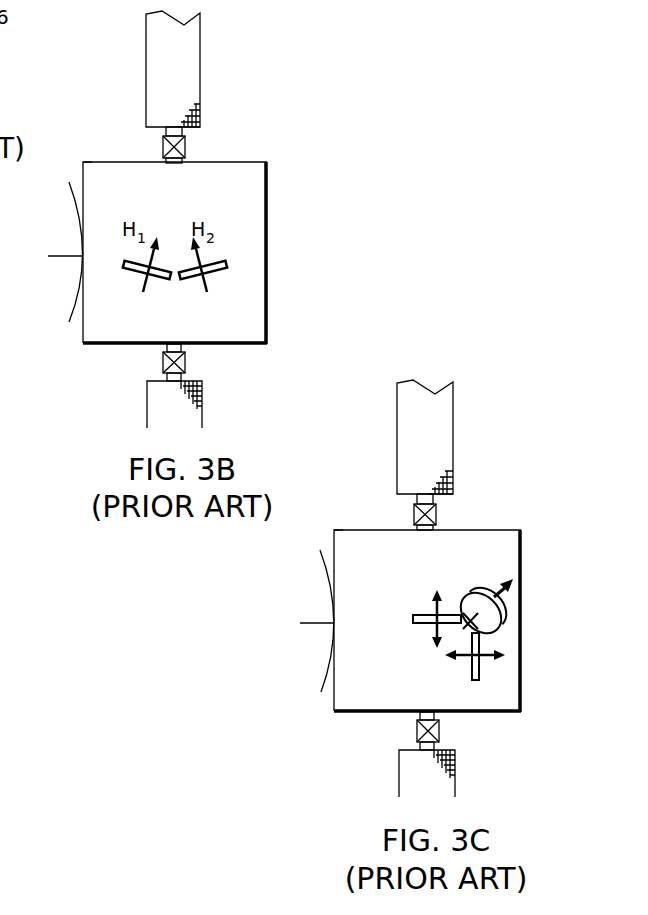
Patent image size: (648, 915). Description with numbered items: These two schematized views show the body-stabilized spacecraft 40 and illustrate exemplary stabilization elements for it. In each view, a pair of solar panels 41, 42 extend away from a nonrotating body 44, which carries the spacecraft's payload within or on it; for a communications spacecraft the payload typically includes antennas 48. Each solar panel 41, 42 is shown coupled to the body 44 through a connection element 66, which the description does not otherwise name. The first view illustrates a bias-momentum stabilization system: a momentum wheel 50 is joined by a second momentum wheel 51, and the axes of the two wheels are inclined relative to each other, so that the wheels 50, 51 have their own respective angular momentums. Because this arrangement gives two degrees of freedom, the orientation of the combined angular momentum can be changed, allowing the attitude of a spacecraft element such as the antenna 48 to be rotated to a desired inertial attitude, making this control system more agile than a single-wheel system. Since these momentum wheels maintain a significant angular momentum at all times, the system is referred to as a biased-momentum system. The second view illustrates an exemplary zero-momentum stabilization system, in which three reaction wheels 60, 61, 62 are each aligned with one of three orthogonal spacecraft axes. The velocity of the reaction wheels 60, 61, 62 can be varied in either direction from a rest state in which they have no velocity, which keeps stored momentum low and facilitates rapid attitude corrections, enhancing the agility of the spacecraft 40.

In FIG. 3B, the body-stabilized spacecraft 40 is at (256, 142).
In FIG. 3C, the body-stabilized spacecraft 40 is at (509, 511).
In FIG. 3B, the solar panel 41 is at (146, 69).
In FIG. 3C, the solar panel 41 is at (397, 437).
In FIG. 3B, the solar panel 42 is at (147, 415).
In FIG. 3C, the solar panel 42 is at (399, 783).
In FIG. 3B, the nonrotating body 44 is at (92, 162).
In FIG. 3C, the nonrotating body 44 is at (343, 530).
In FIG. 3B, the antenna 48 is at (72, 311).
In FIG. 3C, the antenna 48 is at (322, 683).
In FIG. 3B, the momentum wheel 50 is at (124, 261).
In FIG. 3B, the second momentum wheel 51 is at (226, 261).
In FIG. 3C, the reaction wheel 60 is at (413, 619).
In FIG. 3C, the reaction wheel 61 is at (481, 668).
In FIG. 3C, the reaction wheel 62 is at (505, 620).
In FIG. 3B, the valve 66 is at (188, 362).
In FIG. 3C, the valve 66 is at (440, 731).